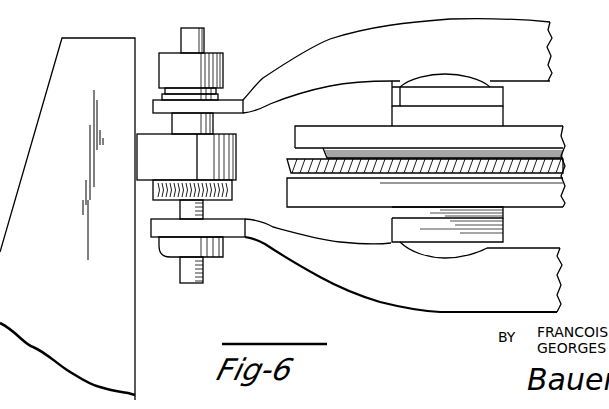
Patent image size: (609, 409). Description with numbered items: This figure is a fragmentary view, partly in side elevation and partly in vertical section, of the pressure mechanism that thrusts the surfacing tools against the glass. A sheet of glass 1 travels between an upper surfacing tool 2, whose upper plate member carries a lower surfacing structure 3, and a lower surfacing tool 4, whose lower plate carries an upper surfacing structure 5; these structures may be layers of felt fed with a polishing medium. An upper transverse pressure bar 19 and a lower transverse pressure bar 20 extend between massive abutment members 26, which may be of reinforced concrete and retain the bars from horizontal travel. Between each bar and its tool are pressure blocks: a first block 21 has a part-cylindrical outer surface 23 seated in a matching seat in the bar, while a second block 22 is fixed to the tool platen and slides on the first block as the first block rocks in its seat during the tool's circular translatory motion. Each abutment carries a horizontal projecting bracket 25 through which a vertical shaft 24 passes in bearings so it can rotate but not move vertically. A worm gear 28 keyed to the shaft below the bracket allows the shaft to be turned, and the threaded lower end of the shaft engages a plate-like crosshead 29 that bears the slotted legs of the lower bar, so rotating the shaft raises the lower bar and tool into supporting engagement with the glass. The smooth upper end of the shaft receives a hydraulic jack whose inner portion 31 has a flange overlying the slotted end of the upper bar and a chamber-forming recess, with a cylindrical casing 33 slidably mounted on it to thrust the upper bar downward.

The sheet of glass 1 is at (565, 172).
The upper surfacing tool 2 is at (540, 130).
The lower surfacing structure 3 is at (548, 155).
The lower surfacing tool 4 is at (357, 200).
The upper surfacing structure 5 is at (441, 178).
The upper transverse pressure bar 19 is at (386, 38).
The lower transverse pressure bar 20 is at (313, 271).
The first block 21 is at (392, 97).
The second block 22 is at (410, 115).
The part-cylindrical outer surface 23 is at (424, 253).
The shaft 24 is at (204, 28).
The bracket 25 is at (233, 165).
The abutment member 26 is at (57, 74).
The worm gear 28 is at (222, 193).
The crosshead 29 is at (181, 248).
The inner portion of hydraulic jack 31 is at (217, 93).
The cylindrical casing 33 is at (223, 66).